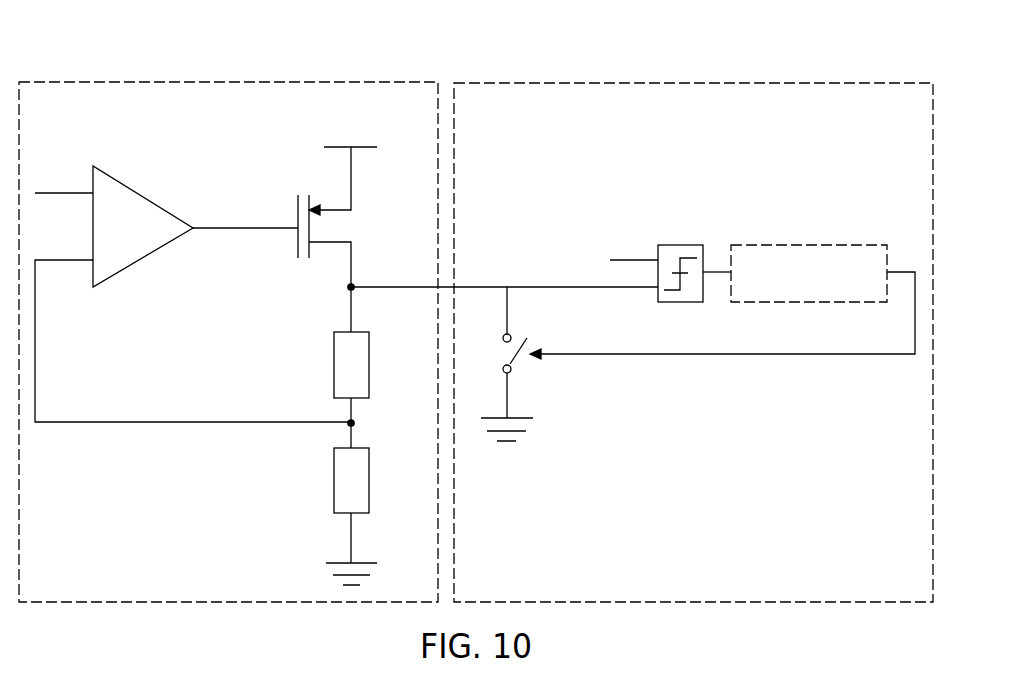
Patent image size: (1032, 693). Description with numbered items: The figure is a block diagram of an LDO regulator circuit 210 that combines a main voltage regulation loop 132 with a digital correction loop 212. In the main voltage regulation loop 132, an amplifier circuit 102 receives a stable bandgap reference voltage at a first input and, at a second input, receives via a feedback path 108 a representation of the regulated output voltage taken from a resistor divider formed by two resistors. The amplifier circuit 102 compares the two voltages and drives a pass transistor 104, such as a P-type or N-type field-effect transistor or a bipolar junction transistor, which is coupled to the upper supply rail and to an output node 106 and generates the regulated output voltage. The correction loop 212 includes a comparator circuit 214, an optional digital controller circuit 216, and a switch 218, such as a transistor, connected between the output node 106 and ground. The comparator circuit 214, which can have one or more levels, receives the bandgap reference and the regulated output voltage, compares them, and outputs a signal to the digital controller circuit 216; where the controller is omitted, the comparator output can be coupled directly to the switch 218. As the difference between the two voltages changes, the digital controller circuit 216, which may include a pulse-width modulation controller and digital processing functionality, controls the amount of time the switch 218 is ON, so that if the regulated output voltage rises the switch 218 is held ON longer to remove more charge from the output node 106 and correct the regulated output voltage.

The LDO regulator circuit 210 is at (92, 48).
The main voltage regulation loop 132 is at (229, 82).
The amplifier circuit 102 is at (144, 197).
The pass transistor 104 is at (297, 243).
The output node 106 is at (352, 318).
The feedback path 108 is at (183, 422).
The correction loop 212 is at (694, 83).
The comparator circuit 214 is at (680, 245).
The digital controller circuit 216 is at (810, 245).
The switch 218 is at (514, 357).